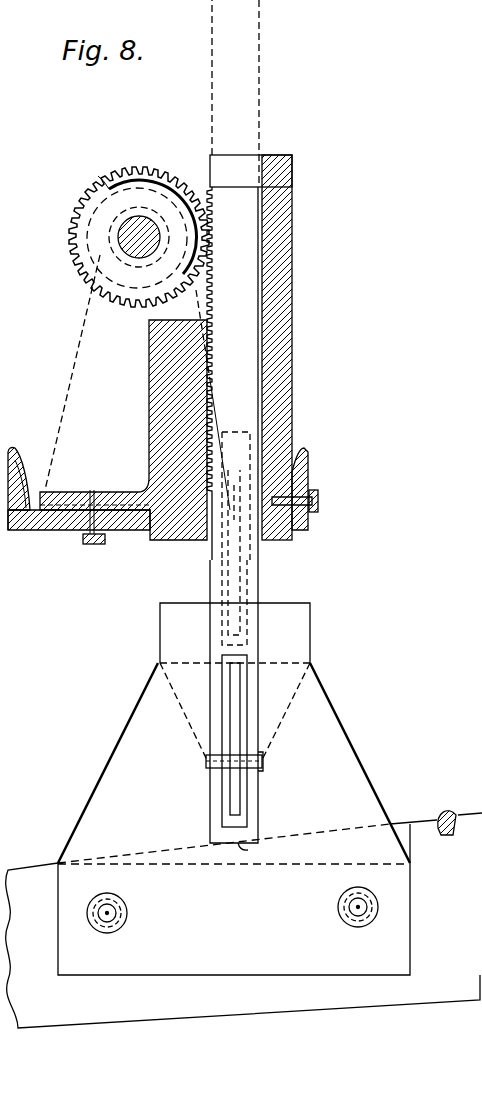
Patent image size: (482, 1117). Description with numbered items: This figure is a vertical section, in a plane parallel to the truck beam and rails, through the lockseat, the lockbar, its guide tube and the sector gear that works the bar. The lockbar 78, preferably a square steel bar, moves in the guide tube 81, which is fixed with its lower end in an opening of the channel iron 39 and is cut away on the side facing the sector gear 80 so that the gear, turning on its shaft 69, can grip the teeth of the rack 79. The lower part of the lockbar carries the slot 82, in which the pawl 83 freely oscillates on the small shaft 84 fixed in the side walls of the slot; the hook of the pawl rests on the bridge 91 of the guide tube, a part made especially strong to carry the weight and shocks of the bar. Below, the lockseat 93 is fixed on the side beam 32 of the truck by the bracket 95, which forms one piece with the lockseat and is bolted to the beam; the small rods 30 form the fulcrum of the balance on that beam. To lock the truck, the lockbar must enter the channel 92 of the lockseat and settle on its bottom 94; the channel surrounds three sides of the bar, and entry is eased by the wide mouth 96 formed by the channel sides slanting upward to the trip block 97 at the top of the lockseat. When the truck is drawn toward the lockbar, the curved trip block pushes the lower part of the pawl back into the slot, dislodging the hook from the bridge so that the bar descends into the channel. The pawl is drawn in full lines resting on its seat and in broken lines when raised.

The small rods 30 is at (450, 810).
The side beam 32 is at (243, 945).
The channel iron 39 is at (50, 531).
The shaft 69 is at (125, 227).
The lockbar 78 is at (260, 99).
The rack 79 is at (212, 168).
The sector gear 80 is at (70, 242).
The guide tube 81 is at (292, 190).
The slot 82 is at (222, 670).
The pawl 83 is at (232, 690).
The small shaft 84 is at (262, 758).
The bridge 91 is at (213, 542).
The channel 92 is at (207, 775).
The lockseat 93 is at (365, 770).
The bottom 94 is at (248, 849).
The bracket 95 is at (234, 899).
The wide mouth 96 is at (300, 683).
The trip block 97 is at (310, 625).